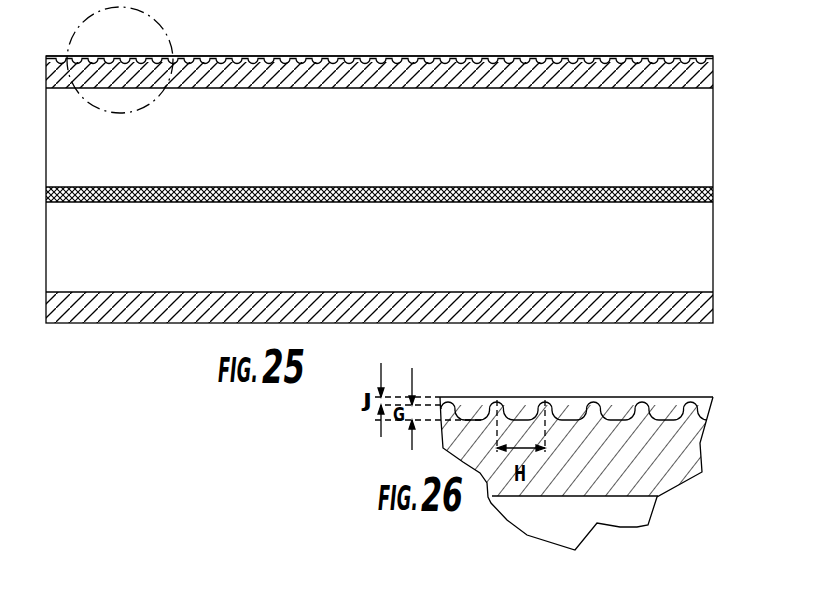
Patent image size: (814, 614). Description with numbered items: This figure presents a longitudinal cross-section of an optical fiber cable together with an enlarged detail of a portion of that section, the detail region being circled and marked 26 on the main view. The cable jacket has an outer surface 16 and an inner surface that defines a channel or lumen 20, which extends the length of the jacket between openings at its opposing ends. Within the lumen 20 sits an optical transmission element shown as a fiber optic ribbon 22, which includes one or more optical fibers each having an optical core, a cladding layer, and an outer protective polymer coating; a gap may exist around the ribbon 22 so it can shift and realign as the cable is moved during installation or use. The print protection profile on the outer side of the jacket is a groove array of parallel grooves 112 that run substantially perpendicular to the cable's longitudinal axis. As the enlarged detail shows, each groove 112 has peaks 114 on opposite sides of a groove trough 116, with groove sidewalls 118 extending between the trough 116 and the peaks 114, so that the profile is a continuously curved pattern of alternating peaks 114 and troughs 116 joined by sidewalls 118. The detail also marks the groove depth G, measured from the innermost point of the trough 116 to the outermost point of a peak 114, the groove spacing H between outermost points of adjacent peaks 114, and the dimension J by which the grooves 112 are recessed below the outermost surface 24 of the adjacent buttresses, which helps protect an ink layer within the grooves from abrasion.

In FIG. 25, the outer surface 16 is at (0, 401).
In FIG. 25, the lumen 20 is at (668, 143).
In FIG. 25, the fiber optic ribbon 22 is at (712, 194).
In FIG. 26, the outer surface 24 is at (707, 400).
In FIG. 25, the detail region 26 is at (163, 88).
In FIG. 25, the grooves 112 is at (558, 57).
In FIG. 26, the grooves 112 is at (611, 390).
In FIG. 25, the peaks 114 is at (497, 57).
In FIG. 26, the peaks 114 is at (616, 419).
In FIG. 25, the groove trough 116 is at (473, 63).
In FIG. 26, the groove trough 116 is at (708, 403).
In FIG. 26, the groove sidewalls 118 is at (693, 428).